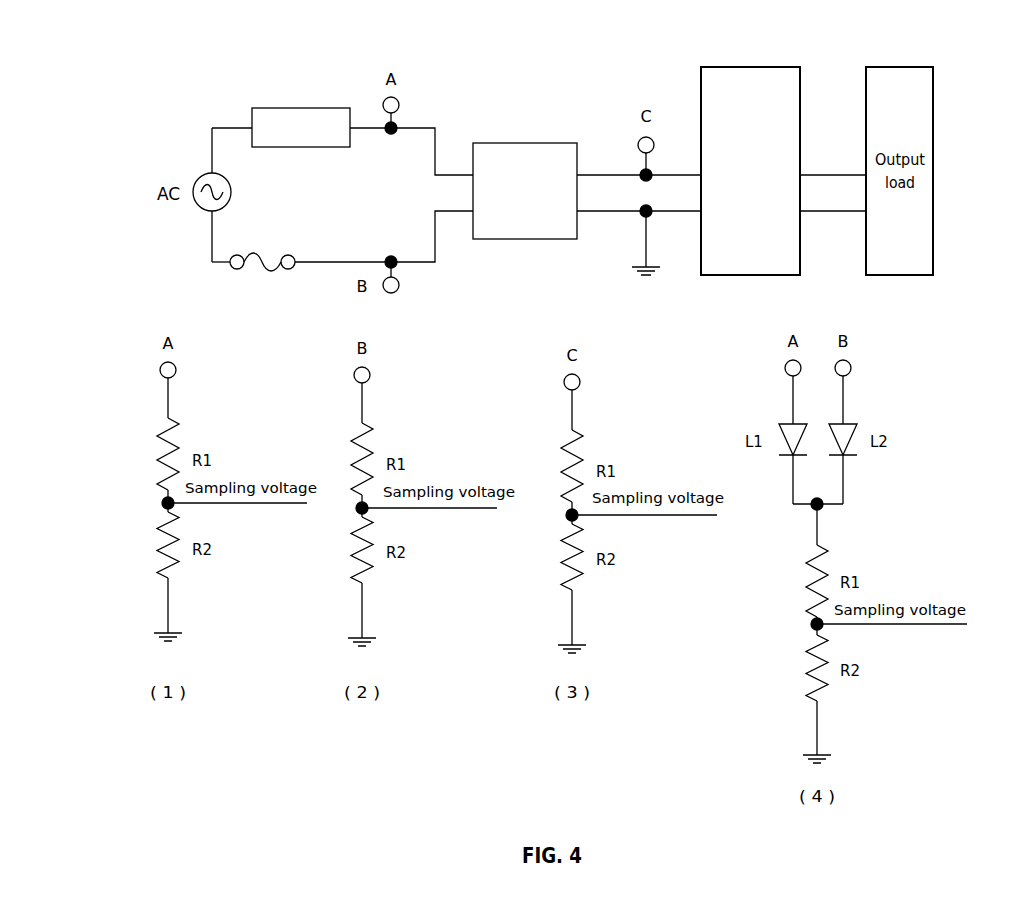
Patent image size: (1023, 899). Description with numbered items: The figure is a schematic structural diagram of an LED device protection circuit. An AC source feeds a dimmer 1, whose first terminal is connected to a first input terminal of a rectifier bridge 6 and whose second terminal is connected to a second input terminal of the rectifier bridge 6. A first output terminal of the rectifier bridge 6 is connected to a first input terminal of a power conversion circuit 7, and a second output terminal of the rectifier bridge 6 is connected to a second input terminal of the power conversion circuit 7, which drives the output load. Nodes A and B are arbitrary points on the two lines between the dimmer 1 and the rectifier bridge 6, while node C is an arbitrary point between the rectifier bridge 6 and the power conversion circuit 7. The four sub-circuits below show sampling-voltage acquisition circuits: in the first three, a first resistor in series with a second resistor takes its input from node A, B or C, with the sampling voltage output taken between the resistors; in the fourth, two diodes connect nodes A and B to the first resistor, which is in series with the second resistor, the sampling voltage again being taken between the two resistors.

The dimmer 1 is at (302, 107).
The rectifier bridge 6 is at (520, 142).
The power conversion circuit 7 is at (740, 66).